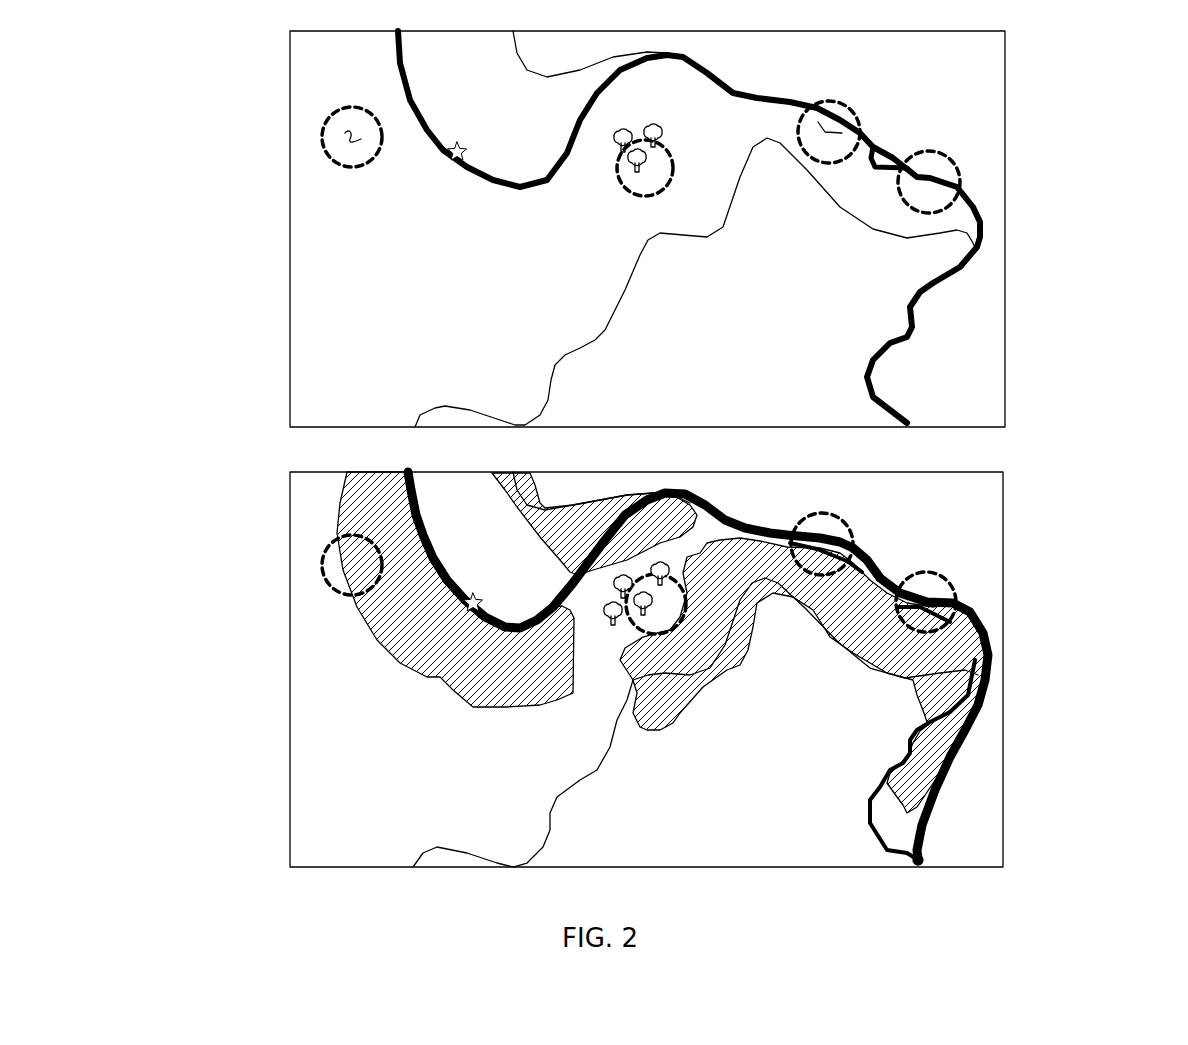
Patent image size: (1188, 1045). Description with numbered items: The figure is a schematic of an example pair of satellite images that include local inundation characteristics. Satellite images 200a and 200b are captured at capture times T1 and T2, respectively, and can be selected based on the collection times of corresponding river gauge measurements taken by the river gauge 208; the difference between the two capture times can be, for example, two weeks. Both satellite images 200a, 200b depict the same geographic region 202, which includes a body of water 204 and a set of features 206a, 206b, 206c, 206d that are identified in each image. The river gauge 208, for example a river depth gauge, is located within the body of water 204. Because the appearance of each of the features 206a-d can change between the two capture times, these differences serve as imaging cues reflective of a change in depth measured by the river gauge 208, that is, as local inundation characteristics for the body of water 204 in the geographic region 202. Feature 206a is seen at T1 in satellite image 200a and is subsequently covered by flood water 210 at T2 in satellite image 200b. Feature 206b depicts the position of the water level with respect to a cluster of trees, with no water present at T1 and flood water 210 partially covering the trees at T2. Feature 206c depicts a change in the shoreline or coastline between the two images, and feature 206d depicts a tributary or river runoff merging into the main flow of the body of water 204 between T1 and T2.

The satellite image 200a is at (1004, 185).
The satellite image 200b is at (1003, 595).
The geographic region 202 is at (307, 518).
The body of water 204 is at (973, 613).
The feature 206a is at (323, 152).
The feature 206b is at (624, 192).
The feature 206c is at (817, 160).
The feature 206d is at (910, 206).
The river gauge 208 is at (452, 163).
The flood water 210 is at (380, 643).